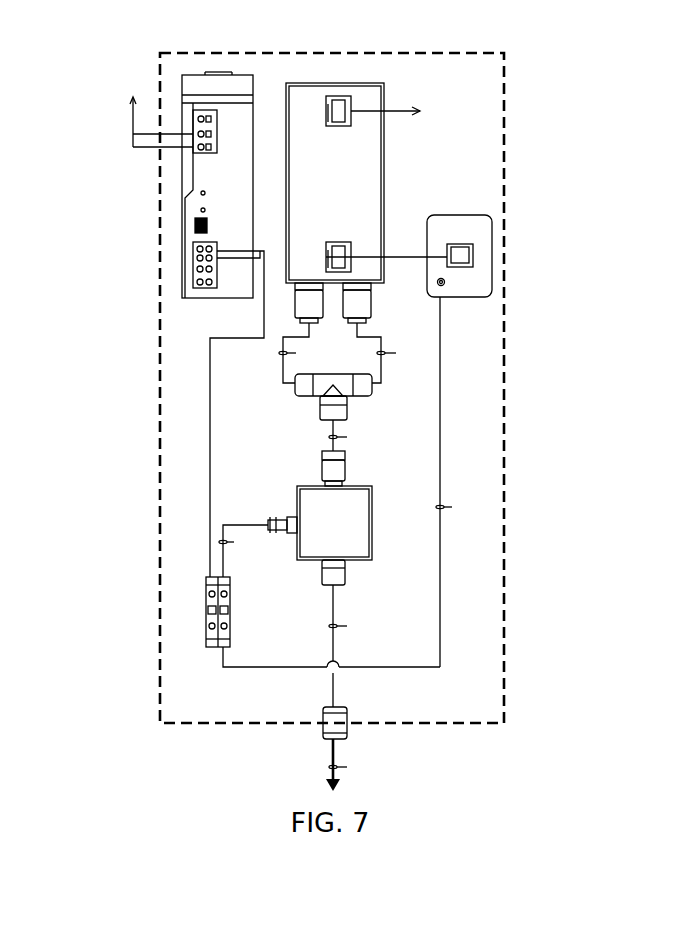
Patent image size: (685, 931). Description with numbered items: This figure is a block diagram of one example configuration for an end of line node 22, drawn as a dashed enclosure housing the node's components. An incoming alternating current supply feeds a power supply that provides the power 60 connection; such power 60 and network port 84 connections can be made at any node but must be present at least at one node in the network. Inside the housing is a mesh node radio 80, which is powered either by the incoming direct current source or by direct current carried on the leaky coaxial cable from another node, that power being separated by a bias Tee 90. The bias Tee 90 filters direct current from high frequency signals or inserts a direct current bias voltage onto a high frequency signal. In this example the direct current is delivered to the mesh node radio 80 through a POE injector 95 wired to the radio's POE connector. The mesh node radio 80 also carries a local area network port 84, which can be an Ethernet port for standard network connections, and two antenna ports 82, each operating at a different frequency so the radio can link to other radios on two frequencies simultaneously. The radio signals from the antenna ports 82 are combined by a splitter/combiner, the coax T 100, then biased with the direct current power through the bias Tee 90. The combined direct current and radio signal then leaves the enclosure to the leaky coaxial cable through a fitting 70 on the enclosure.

The end of line node 22 is at (556, 114).
The power 60 is at (143, 143).
The mesh node radio 80 is at (365, 166).
The local area network (LAN) port 84 is at (395, 115).
The antenna ports 82 is at (300, 307).
The POE injector 95 is at (489, 243).
The splitter/combiner (coax T) 100 is at (347, 392).
The bias Tee 90 is at (333, 533).
The fitting 70 is at (347, 727).